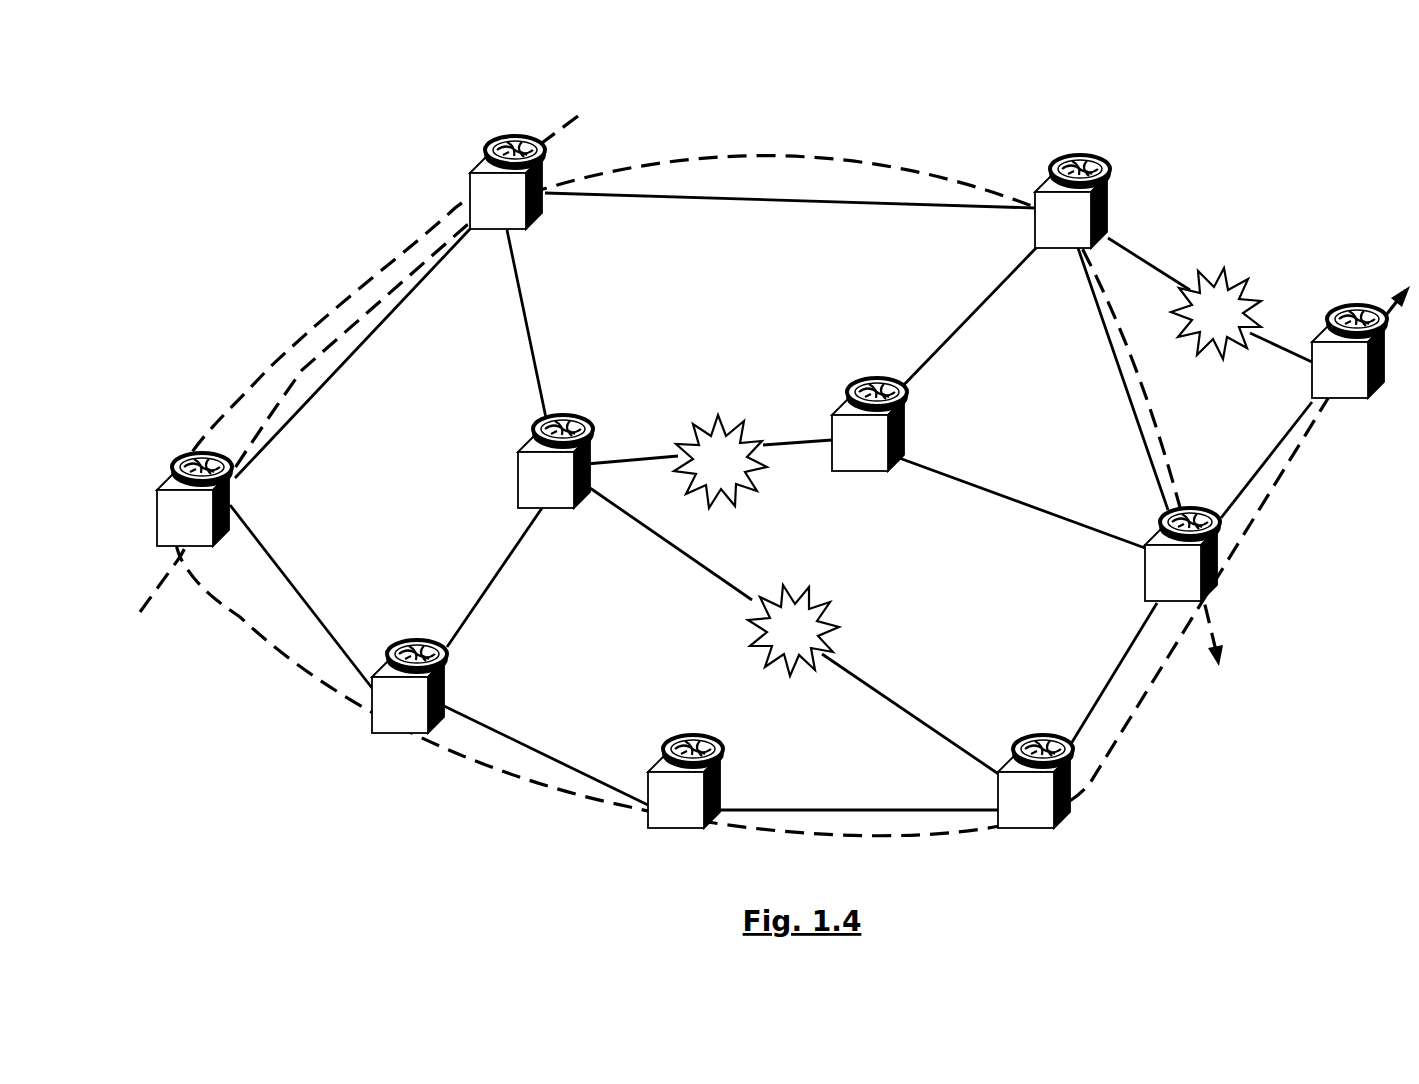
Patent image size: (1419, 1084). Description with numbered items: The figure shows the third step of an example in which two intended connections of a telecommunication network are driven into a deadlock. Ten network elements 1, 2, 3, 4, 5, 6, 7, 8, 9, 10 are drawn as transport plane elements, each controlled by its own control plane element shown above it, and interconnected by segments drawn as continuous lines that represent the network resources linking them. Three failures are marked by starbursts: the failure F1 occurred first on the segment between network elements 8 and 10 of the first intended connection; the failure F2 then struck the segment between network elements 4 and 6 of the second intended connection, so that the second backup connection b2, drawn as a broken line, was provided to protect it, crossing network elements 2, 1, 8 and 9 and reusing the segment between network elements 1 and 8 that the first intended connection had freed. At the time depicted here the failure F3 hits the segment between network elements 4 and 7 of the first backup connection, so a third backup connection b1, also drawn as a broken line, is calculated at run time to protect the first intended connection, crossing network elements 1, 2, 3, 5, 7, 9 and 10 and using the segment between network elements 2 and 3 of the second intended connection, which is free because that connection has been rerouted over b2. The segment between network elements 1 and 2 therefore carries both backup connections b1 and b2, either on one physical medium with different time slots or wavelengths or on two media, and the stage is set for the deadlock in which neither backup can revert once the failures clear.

The network element 1 is at (507, 168).
The network element 2 is at (201, 486).
The network element 3 is at (409, 673).
The network element 4 is at (564, 448).
The network element 5 is at (685, 768).
The network element 6 is at (869, 411).
The network element 7 is at (1036, 768).
The network element 8 is at (1072, 188).
The network element 9 is at (1184, 540).
The network element 10 is at (1349, 338).
The third backup connection b1 is at (791, 464).
The second backup connection b2 is at (665, 411).
The failure F1 is at (1216, 313).
The failure F2 is at (720, 461).
The failure F3 is at (793, 630).